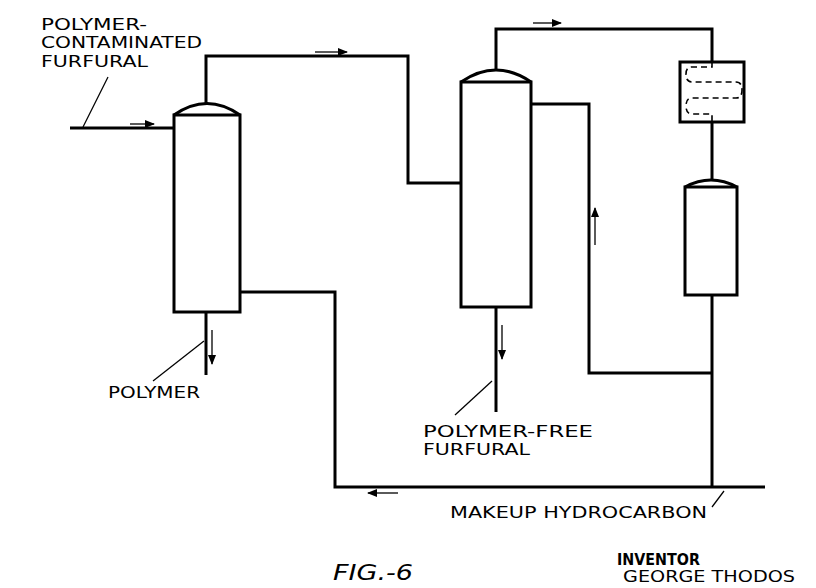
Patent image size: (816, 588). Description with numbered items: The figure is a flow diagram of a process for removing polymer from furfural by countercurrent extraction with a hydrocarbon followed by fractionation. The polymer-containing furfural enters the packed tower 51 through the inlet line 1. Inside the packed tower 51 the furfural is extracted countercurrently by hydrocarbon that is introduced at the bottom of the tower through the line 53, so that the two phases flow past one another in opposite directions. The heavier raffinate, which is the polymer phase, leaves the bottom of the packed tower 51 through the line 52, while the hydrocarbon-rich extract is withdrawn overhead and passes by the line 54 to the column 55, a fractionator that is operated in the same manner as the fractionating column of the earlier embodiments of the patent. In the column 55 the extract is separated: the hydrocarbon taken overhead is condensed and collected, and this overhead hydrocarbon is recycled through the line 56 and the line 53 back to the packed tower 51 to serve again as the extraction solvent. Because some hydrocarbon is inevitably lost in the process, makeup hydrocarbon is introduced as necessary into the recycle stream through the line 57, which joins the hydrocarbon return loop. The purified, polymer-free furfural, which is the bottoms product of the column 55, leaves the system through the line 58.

The line 1 is at (133, 130).
The packed tower 51 is at (241, 183).
The line 52 is at (225, 343).
The line 53 is at (333, 305).
The line 54 is at (329, 58).
The column 55 is at (461, 222).
The line 56 is at (714, 440).
The line 57 is at (722, 488).
The line 58 is at (492, 333).